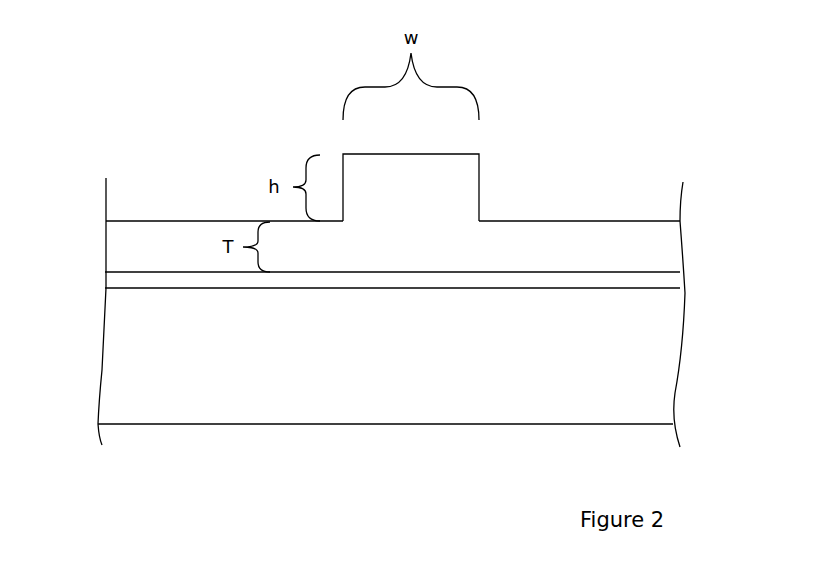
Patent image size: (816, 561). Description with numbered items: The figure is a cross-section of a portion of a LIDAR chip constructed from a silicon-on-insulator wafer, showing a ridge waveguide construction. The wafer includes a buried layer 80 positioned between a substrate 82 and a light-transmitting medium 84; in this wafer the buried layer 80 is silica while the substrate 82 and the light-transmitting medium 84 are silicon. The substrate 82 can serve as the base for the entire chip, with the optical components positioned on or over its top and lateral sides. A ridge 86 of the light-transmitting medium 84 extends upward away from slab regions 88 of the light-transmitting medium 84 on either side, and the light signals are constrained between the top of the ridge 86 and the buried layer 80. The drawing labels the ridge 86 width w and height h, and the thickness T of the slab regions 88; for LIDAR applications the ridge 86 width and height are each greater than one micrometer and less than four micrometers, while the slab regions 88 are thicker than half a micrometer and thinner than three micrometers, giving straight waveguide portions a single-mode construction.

The buried layer 80 is at (262, 283).
The substrate 82 is at (110, 403).
The light-transmitting medium 84 is at (153, 248).
The ridge 86 is at (507, 182).
The slab regions 88 is at (247, 221).